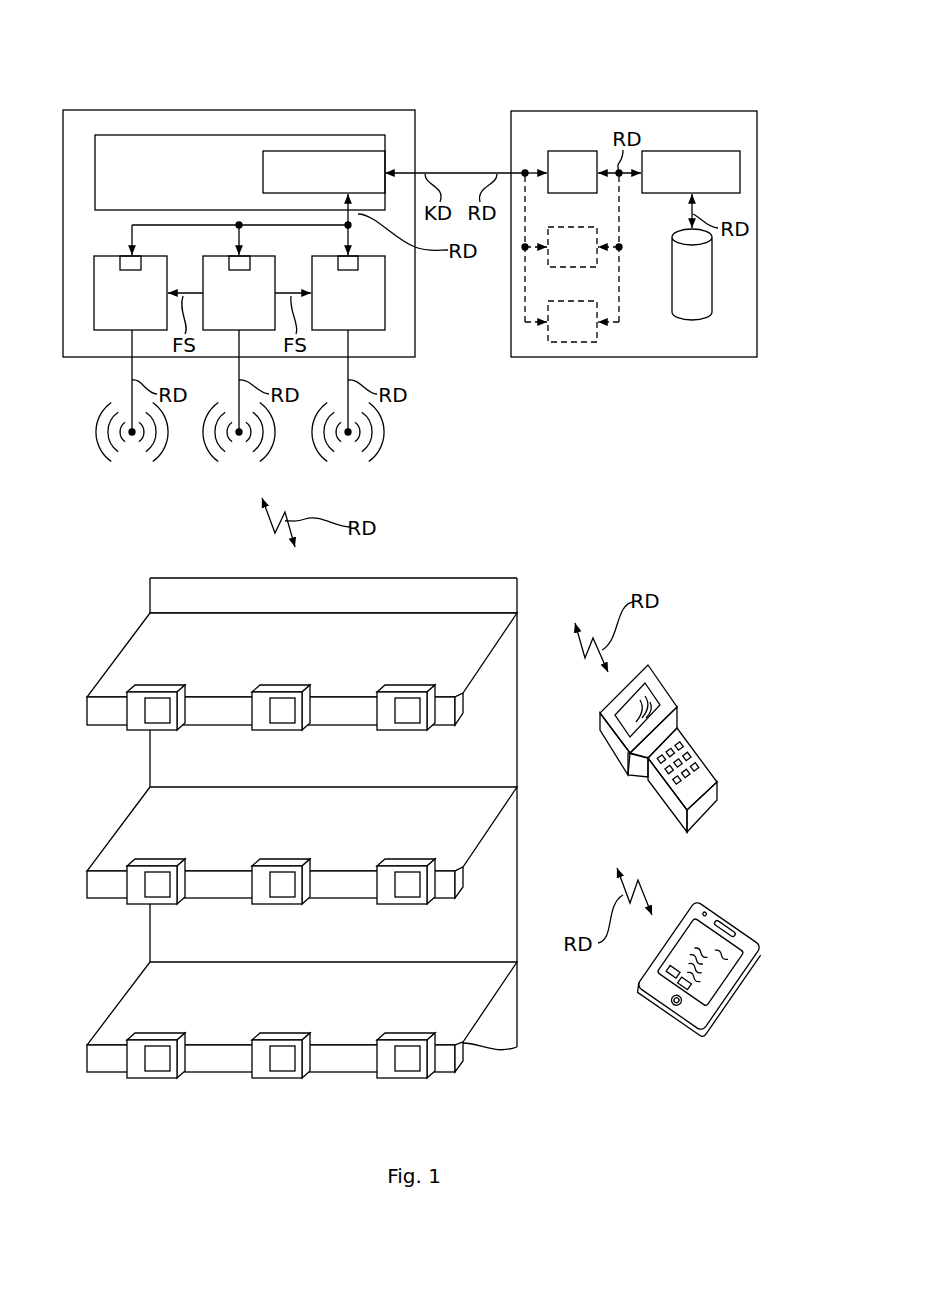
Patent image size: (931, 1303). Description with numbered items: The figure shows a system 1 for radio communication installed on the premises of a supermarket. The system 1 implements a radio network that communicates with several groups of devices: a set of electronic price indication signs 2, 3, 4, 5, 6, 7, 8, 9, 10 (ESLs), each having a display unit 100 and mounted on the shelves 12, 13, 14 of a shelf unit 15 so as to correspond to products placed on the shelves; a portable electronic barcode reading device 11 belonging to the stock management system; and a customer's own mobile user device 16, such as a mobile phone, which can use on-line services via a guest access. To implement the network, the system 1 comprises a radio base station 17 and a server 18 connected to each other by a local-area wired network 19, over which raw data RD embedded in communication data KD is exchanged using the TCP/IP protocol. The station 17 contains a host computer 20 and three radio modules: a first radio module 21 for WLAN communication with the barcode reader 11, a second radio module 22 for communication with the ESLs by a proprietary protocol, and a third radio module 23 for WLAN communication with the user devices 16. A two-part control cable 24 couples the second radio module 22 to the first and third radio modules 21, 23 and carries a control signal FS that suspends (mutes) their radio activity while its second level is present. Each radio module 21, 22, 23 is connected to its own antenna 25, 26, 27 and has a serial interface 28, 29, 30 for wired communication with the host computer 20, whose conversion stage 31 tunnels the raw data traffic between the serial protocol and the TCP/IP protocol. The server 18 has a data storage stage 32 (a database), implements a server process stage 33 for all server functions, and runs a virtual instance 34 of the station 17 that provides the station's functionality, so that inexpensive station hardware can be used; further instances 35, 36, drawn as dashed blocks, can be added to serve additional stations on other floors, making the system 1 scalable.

The system 1 is at (684, 73).
The electronic price indication sign 2 is at (164, 691).
The electronic price indication sign 3 is at (289, 691).
The electronic price indication sign 4 is at (414, 691).
The electronic price indication sign 5 is at (164, 865).
The electronic price indication sign 6 is at (289, 865).
The electronic price indication sign 7 is at (414, 865).
The electronic price indication sign 8 is at (164, 1039).
The electronic price indication sign 9 is at (289, 1039).
The electronic price indication sign 10 is at (414, 1039).
The portable electronic barcode reading device 11 is at (663, 682).
The shelf 12 is at (122, 648).
The shelf 13 is at (122, 822).
The shelf 14 is at (122, 998).
The shelf unit 15 is at (297, 831).
The user device 16 is at (717, 905).
The radio base station 17 is at (290, 110).
The server 18 is at (552, 111).
The local-area wired network (LAN) 19 is at (443, 173).
The host computer 20 is at (160, 135).
The first radio module 21 is at (117, 257).
The second radio module 22 is at (224, 257).
The third radio module 23 is at (331, 257).
The control cable 24 is at (181, 292).
The antenna 25 is at (132, 379).
The antenna 26 is at (239, 379).
The antenna 27 is at (348, 379).
The serial interface 28 is at (137, 258).
The serial interface 29 is at (246, 258).
The serial interface 30 is at (352, 258).
The conversion stage 31 is at (263, 172).
The data storage stage 32 is at (707, 265).
The server process stage 33 is at (692, 151).
The virtual instance 34 is at (572, 151).
The instance 35 is at (597, 233).
The instance 36 is at (597, 310).
The display unit 100 is at (158, 718).